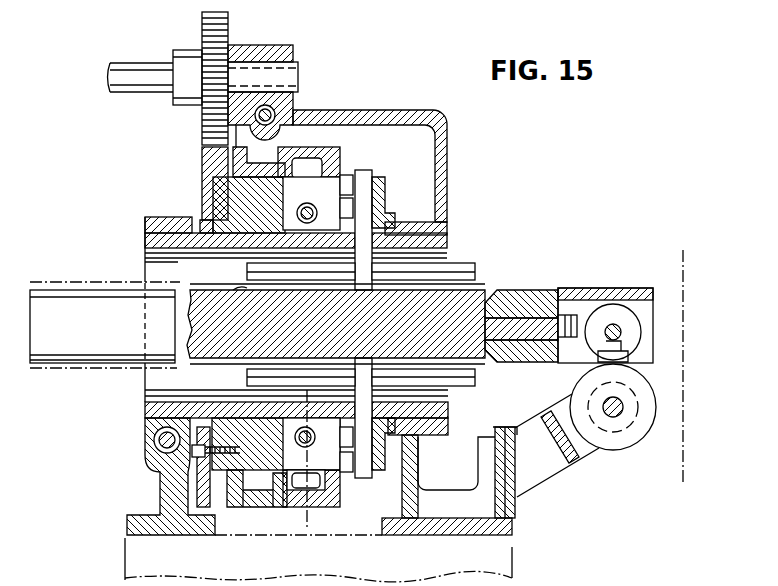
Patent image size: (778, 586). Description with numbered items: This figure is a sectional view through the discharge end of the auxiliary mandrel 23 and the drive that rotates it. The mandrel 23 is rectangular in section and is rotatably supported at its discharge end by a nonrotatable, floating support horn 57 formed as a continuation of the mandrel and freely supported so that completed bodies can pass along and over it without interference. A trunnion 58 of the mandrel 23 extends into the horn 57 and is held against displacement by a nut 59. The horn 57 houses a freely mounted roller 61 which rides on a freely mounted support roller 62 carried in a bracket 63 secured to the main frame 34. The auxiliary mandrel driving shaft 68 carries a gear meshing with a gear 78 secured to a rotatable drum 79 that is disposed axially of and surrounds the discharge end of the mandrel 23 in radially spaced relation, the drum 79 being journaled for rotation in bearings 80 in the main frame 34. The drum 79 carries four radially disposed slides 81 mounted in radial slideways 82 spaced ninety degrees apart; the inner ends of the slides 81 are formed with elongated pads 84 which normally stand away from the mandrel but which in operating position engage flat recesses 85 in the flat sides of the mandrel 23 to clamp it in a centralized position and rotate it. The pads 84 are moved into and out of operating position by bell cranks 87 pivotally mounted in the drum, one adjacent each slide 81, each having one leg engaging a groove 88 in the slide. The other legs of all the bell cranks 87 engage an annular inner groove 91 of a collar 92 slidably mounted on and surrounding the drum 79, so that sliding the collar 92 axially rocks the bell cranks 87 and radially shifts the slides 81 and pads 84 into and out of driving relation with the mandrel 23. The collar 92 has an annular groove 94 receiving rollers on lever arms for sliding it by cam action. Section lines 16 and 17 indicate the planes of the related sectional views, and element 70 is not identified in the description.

The section line 16- 16 is at (333, 397).
The section line 17- 17 is at (720, 258).
The auxiliary mandrel 23 is at (77, 300).
The main frame 34 is at (505, 531).
The floating support horn 57 is at (512, 292).
The trunnion 58 is at (528, 335).
The nut 59 is at (570, 315).
The roller 61 is at (655, 312).
The support roller 62 is at (628, 440).
The bracket 63 is at (547, 463).
The auxiliary mandrel driving shaft 68 is at (132, 45).
The gear hub 70 is at (267, 50).
The gear 78 is at (202, 152).
The rotatable drum 79 is at (232, 195).
The bearings 80 is at (157, 220).
The slides 81 is at (366, 175).
The radial slideways 82 is at (374, 190).
The pads 84 is at (462, 263).
The flat recesses 85 is at (248, 292).
The bell cranks 87 is at (313, 192).
The groove 88 is at (354, 207).
The annular inner groove 91 is at (305, 490).
The collar 92 is at (307, 493).
The annular groove 94 is at (258, 158).